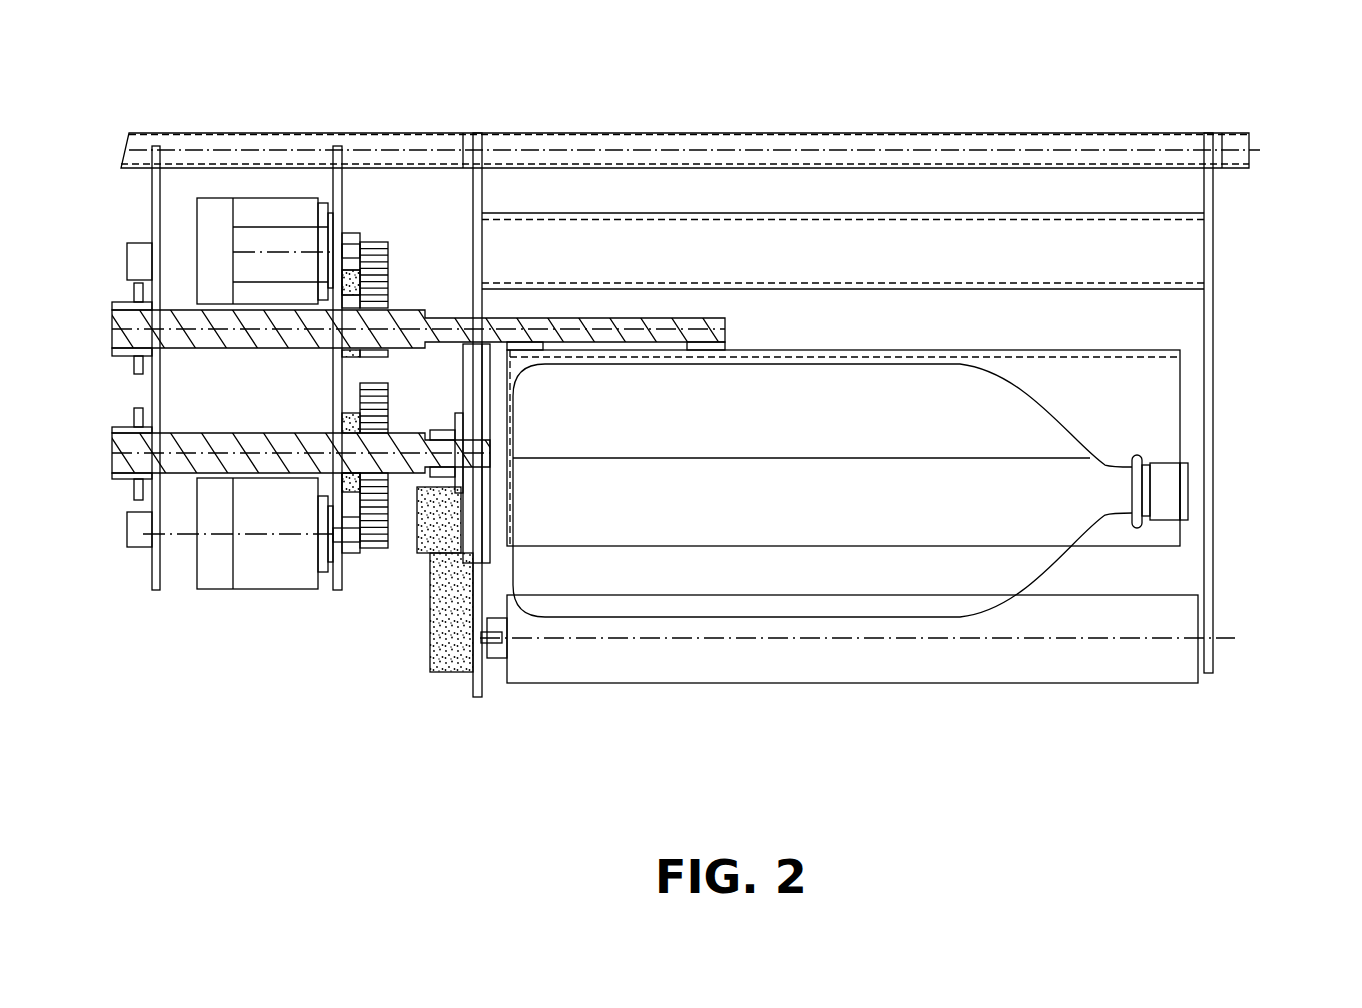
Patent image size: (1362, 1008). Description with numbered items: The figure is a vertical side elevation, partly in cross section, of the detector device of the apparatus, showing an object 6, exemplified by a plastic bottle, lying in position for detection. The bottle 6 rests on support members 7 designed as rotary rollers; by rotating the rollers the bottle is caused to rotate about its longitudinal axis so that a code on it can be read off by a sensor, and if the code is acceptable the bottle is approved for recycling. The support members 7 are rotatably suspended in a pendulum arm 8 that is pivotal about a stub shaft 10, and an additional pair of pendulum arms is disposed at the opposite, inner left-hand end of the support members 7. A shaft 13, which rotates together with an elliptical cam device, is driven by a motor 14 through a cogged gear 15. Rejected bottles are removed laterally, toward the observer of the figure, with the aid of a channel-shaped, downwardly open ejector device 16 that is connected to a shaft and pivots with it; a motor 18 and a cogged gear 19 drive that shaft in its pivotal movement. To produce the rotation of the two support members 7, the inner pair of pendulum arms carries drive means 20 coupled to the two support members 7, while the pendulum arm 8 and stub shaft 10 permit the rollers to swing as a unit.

The object 6 is at (900, 605).
The support members 7 is at (726, 665).
The pendulum arm 8 is at (472, 190).
The stub shaft 10 is at (488, 145).
The shaft 13 is at (175, 462).
The motor 14 is at (265, 570).
The cogged gear 15 is at (373, 533).
The ejector device 16 is at (1143, 412).
The motor 18 is at (272, 215).
The cogged gear 19 is at (375, 243).
The drive means 20 is at (454, 658).